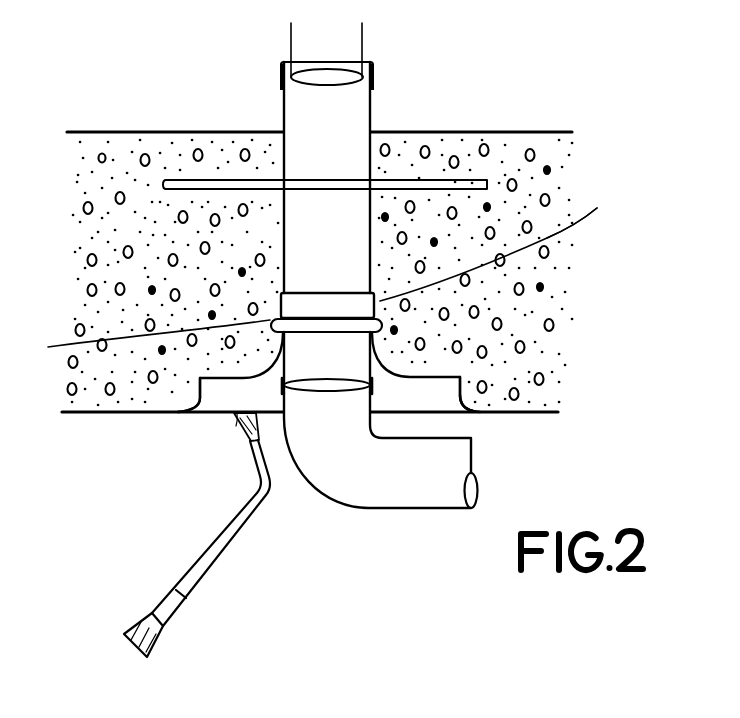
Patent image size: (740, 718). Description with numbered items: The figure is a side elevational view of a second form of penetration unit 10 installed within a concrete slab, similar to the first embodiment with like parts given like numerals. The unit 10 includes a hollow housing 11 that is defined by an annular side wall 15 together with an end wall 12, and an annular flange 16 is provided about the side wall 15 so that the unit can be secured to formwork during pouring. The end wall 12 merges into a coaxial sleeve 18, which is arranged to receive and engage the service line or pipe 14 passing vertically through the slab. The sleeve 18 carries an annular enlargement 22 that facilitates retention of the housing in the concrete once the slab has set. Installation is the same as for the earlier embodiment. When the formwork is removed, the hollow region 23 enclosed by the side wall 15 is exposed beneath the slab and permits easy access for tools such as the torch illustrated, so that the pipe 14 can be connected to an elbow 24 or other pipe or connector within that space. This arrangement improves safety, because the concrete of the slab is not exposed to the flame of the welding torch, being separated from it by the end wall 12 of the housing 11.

The penetration unit 10 is at (170, 448).
The hollow housing 11 is at (496, 392).
The end wall 12 is at (440, 372).
The service line or pipe 14 is at (372, 110).
The annular side wall 15 is at (197, 386).
The annular flange 16 is at (485, 415).
The coaxial sleeve 18 is at (579, 209).
The annular enlargement 22 is at (307, 272).
The hollow region 23 is at (225, 414).
The elbow 24 is at (370, 493).